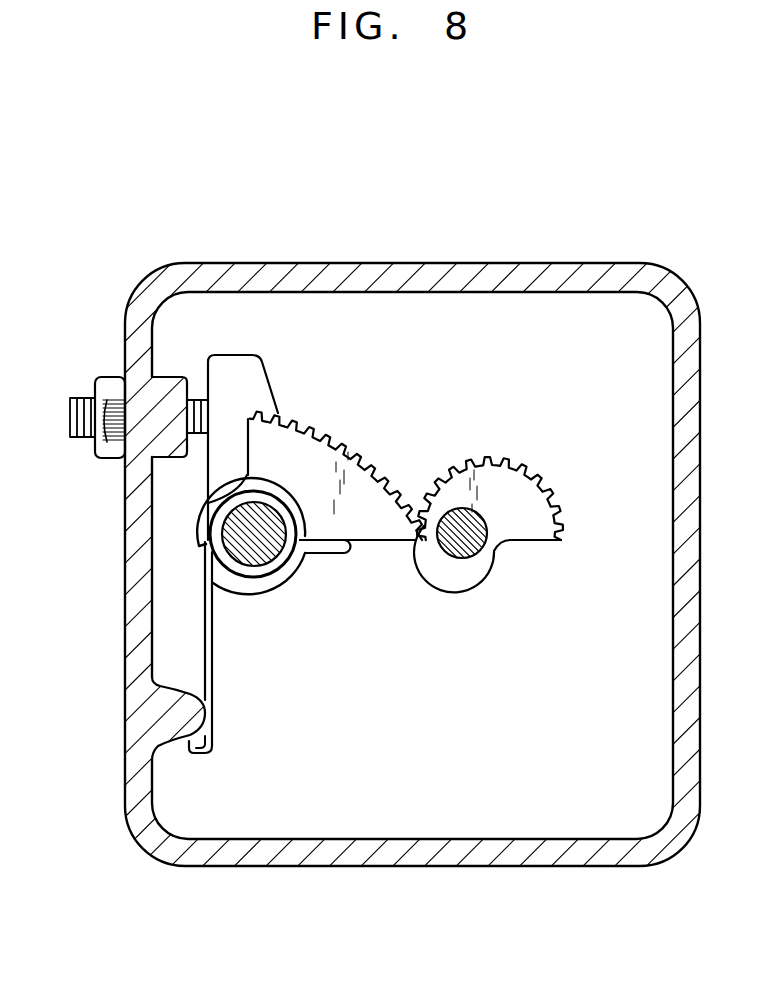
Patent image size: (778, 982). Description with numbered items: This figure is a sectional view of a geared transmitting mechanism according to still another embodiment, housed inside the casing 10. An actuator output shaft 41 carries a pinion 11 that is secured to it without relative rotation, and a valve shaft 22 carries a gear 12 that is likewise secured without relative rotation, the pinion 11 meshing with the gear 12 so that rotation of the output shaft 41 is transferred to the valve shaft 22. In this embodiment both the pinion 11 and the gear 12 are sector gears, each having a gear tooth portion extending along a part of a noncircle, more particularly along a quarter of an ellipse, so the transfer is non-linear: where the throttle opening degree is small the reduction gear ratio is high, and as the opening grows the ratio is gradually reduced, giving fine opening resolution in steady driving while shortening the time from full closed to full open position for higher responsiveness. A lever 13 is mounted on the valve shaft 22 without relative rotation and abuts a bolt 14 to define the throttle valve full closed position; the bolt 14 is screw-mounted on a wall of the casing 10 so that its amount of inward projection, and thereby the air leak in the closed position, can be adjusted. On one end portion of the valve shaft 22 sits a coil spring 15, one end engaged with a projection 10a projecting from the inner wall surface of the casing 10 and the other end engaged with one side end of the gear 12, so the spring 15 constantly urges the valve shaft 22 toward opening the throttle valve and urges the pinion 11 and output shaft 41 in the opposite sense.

The casing 10 is at (186, 858).
The projection 10a is at (186, 713).
The pinion 11 is at (520, 500).
The gear 12 is at (322, 468).
The lever 13 is at (237, 368).
The bolt 14 is at (72, 398).
The coil spring 15 is at (216, 672).
The valve shaft 22 is at (268, 556).
The output shaft 41 is at (478, 546).